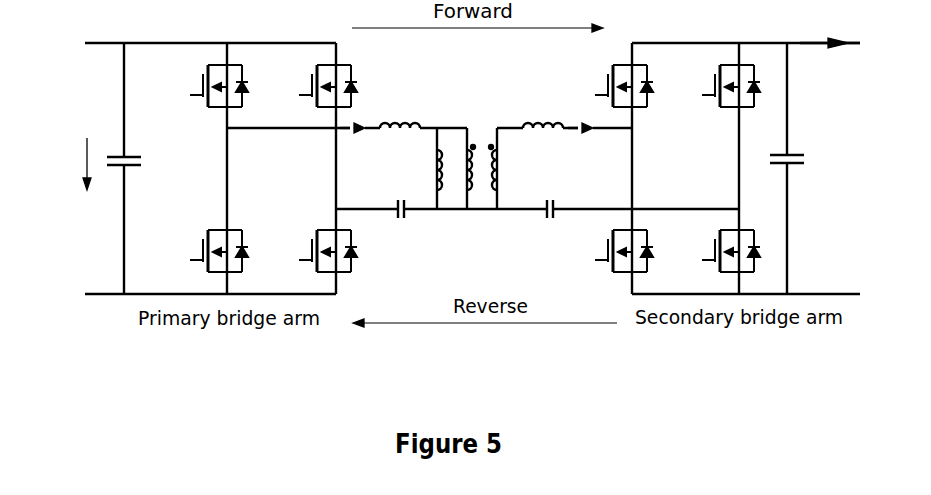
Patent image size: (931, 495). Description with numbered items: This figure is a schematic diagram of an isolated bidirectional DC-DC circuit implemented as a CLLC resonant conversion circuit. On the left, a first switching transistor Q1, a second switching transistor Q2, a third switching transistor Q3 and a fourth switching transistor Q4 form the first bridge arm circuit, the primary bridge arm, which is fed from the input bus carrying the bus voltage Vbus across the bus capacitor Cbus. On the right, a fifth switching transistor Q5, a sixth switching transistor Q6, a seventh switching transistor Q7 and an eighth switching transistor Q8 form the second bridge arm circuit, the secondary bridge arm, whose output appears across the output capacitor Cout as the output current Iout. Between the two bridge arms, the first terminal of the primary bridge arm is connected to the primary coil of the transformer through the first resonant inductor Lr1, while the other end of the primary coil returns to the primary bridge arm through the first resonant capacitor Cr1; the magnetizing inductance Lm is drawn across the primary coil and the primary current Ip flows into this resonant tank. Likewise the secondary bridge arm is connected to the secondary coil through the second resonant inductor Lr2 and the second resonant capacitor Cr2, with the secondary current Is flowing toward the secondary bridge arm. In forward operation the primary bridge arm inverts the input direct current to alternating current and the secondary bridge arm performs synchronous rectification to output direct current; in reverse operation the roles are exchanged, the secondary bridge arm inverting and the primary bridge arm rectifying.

The first switching transistor Q1 is at (212, 88).
The second switching transistor Q2 is at (212, 251).
The third switching transistor Q3 is at (320, 88).
The fourth switching transistor Q4 is at (320, 251).
The fifth switching transistor Q5 is at (614, 83).
The sixth switching transistor Q6 is at (614, 251).
The seventh switching transistor Q7 is at (722, 83).
The eighth switching transistor Q8 is at (723, 251).
The bus capacitor Cbus is at (149, 168).
The bus voltage Vbus is at (64, 164).
The primary current Ip is at (359, 144).
The primary resonant inductor Lr1 is at (400, 112).
The magnetizing inductor Lm is at (421, 170).
The primary resonant capacitor Cr1 is at (399, 229).
The secondary resonant inductor Lr2 is at (543, 112).
The secondary resonant capacitor Cr2 is at (552, 229).
The secondary current Is is at (580, 144).
The output capacitor Cout is at (813, 168).
The output current Iout is at (830, 26).